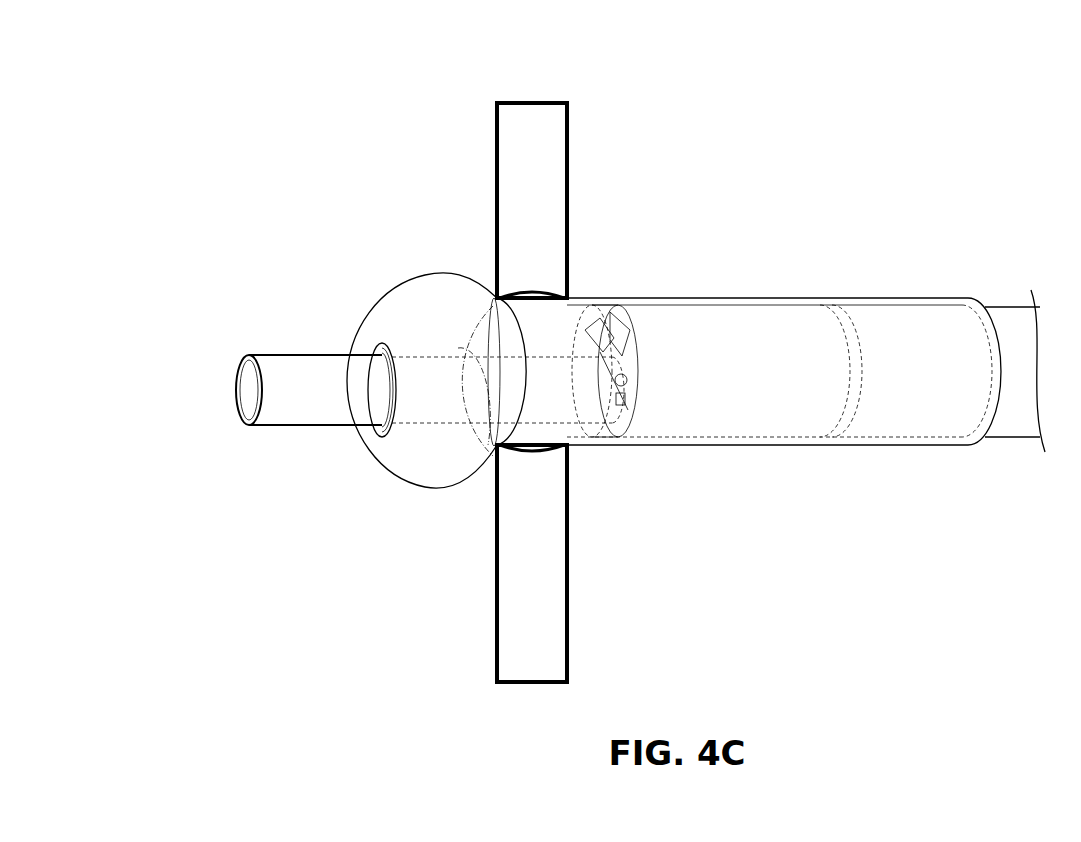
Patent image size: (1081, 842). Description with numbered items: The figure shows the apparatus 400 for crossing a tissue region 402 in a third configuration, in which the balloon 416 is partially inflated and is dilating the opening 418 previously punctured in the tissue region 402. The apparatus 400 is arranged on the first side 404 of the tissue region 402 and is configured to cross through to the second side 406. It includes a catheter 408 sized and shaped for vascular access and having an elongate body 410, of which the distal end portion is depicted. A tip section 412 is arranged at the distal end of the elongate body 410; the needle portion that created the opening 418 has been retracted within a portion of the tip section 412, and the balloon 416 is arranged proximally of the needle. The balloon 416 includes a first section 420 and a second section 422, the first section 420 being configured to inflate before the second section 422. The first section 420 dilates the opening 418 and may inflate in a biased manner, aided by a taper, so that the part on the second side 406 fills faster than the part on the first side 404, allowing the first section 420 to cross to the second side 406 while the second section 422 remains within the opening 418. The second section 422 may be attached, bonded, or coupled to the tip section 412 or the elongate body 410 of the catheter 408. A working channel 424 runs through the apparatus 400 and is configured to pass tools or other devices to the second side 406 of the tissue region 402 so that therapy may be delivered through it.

The apparatus 400 is at (697, 183).
The tissue region 402 is at (497, 137).
The first side 404 is at (828, 72).
The second side 406 is at (295, 72).
The catheter 408 is at (937, 296).
The elongate body 410 is at (1006, 312).
The tip section 412 is at (766, 296).
The balloon 416 is at (642, 296).
The opening 418 is at (494, 484).
The first section 420 is at (468, 387).
The second section 422 is at (580, 447).
The working channel 424 is at (256, 388).